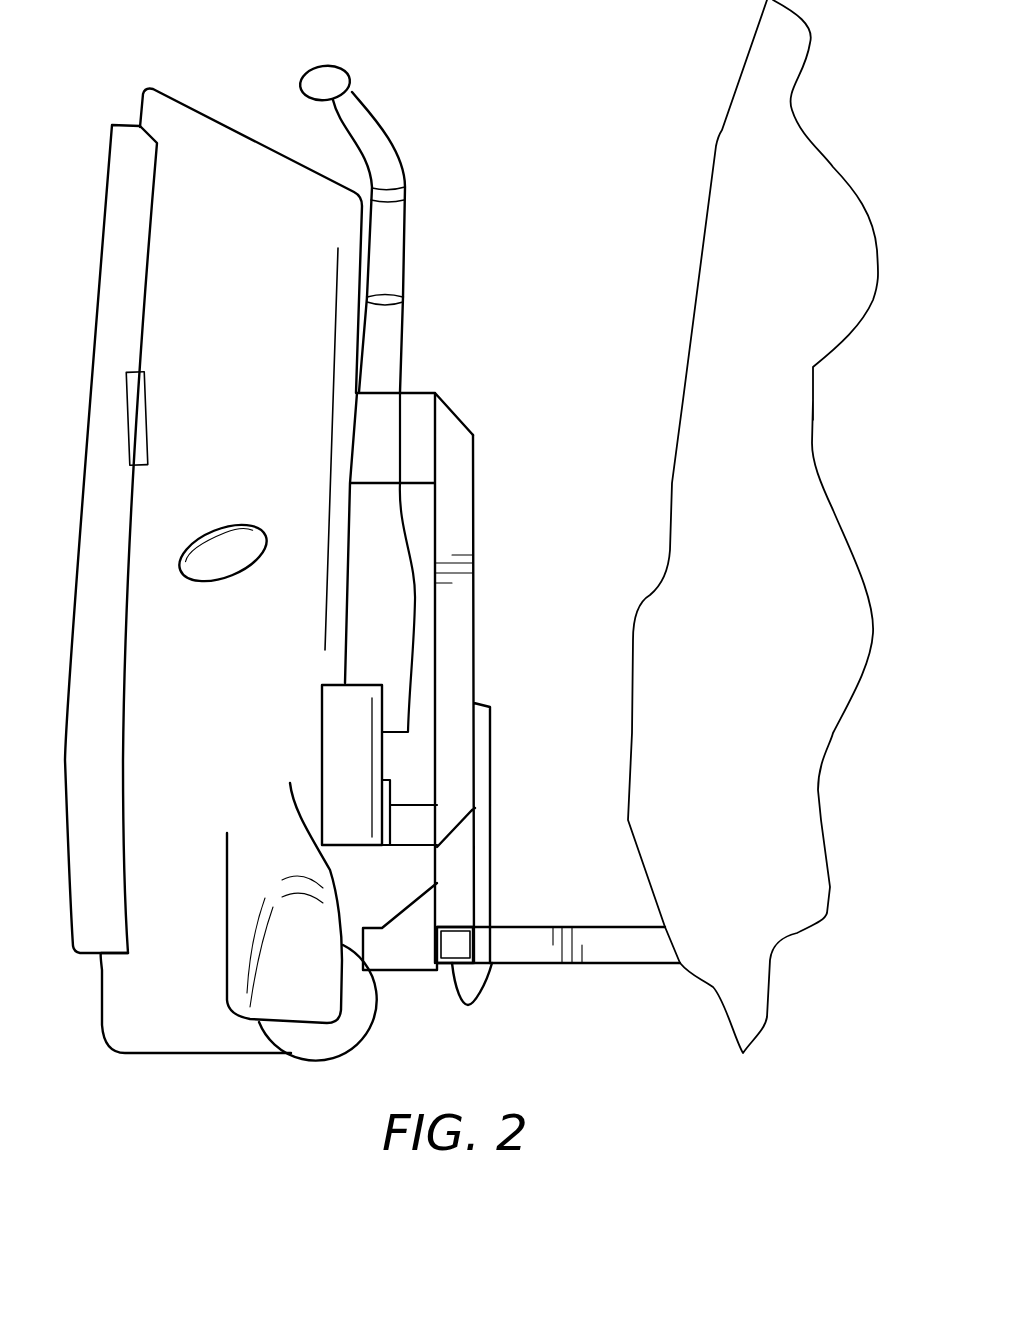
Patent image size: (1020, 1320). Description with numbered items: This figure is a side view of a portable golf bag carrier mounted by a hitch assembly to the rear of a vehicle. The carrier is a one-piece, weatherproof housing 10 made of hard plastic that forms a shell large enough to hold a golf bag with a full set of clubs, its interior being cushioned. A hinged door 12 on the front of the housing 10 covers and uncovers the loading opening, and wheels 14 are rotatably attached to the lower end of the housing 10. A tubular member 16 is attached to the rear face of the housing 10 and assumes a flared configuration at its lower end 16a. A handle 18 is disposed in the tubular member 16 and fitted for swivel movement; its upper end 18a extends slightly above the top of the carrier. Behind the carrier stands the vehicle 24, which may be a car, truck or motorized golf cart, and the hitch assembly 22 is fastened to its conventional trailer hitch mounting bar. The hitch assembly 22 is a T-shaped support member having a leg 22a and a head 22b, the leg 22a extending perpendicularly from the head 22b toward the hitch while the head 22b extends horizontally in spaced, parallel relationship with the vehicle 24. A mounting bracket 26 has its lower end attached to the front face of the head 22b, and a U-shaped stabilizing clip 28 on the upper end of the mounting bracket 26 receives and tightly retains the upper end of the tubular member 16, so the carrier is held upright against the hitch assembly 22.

The housing 10 is at (226, 121).
The hinged door 12 is at (73, 448).
The wheels 14 is at (345, 1056).
The tubular member 16 is at (403, 318).
The flared lower end 16a is at (401, 661).
The handle 18 is at (405, 200).
The upper end 18a is at (353, 80).
The hitch assembly 22 is at (517, 518).
The leg 22a is at (613, 965).
The head 22b is at (428, 968).
The vehicle 24 is at (761, 614).
The mounting bracket 26 is at (475, 645).
The U-shaped stabilizing clip 28 is at (423, 391).